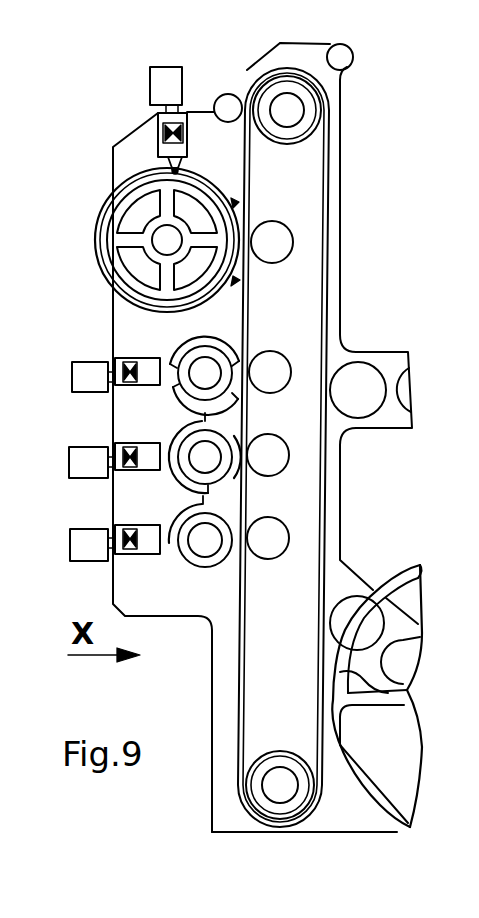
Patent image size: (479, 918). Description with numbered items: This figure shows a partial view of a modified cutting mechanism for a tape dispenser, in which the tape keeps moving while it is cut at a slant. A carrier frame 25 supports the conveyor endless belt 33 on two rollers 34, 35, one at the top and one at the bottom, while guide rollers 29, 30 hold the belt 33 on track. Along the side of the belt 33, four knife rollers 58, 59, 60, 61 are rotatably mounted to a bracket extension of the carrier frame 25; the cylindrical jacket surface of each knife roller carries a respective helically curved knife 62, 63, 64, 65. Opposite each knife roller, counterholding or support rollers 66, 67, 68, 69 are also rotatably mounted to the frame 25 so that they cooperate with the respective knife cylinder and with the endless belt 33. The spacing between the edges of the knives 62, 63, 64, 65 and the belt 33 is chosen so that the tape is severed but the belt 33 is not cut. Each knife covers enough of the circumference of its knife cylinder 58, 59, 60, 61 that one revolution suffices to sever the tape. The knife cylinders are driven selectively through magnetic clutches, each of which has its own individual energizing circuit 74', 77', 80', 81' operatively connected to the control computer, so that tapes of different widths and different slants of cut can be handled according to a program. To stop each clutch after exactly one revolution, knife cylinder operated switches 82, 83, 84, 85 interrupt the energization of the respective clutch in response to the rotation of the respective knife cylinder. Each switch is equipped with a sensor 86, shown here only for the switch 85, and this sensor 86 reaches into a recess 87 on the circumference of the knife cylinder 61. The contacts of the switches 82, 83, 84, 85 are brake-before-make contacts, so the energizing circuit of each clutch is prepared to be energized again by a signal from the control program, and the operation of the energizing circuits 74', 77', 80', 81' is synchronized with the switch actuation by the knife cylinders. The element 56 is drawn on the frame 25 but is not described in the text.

The carrier frame 25 is at (341, 212).
The guide roller 29 is at (350, 61).
The guide roller 30 is at (229, 101).
The conveyor endless belt 33 is at (328, 468).
The roller 34 is at (294, 141).
The roller 35 is at (280, 762).
The cam lever 56 is at (402, 580).
The knife roller 58 is at (212, 566).
The knife roller 59 is at (228, 475).
The knife roller 60 is at (230, 393).
The knife roller 61 is at (130, 238).
The helically curved knife 62 is at (177, 522).
The helically curved knife 63 is at (177, 438).
The helically curved knife 64 is at (176, 360).
The helically curved knife 65 is at (102, 208).
The support roller 66 is at (282, 542).
The support roller 67 is at (284, 456).
The support roller 68 is at (286, 370).
The support roller 69 is at (284, 250).
The energizing circuit 74' is at (63, 545).
The energizing circuit 77' is at (63, 462).
The energizing circuit 80' is at (63, 376).
The energizing circuit 81' is at (151, 79).
The knife cylinder operated switch 82 is at (146, 530).
The knife cylinder operated switch 83 is at (146, 448).
The knife cylinder operated switch 84 is at (146, 362).
The knife cylinder operated switch 85 is at (158, 147).
The sensor 86 is at (182, 168).
The recess 87 is at (166, 164).